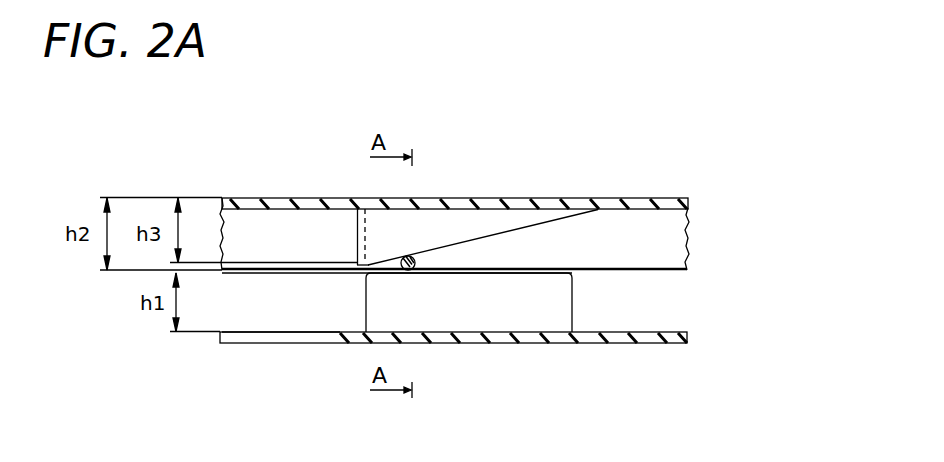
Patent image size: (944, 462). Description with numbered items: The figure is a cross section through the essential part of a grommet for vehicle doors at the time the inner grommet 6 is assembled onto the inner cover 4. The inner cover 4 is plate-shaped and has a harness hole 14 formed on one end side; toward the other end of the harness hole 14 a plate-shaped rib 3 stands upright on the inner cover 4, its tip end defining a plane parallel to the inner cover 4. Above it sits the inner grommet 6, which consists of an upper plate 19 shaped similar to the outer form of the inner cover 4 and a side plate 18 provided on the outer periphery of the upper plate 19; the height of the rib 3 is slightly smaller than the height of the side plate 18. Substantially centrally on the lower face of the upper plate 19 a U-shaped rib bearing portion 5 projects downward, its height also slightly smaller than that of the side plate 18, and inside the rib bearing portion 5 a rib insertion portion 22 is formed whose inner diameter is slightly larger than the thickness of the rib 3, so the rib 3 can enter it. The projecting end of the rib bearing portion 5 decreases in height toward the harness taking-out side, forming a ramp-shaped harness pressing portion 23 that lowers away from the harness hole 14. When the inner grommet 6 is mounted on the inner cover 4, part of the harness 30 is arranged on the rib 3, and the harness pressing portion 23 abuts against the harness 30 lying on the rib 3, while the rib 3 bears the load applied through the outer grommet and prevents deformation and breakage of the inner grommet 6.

The rib 3 is at (572, 300).
The inner cover 4 is at (638, 343).
The rib bearing portion 5 is at (357, 239).
The inner grommet 6 is at (655, 198).
The harness hole 14 is at (340, 333).
The side plate 18 is at (660, 237).
The upper plate 19 is at (573, 207).
The rib insertion portion 22 is at (367, 241).
The harness pressing portion 23 is at (500, 237).
The harness 30 is at (412, 263).